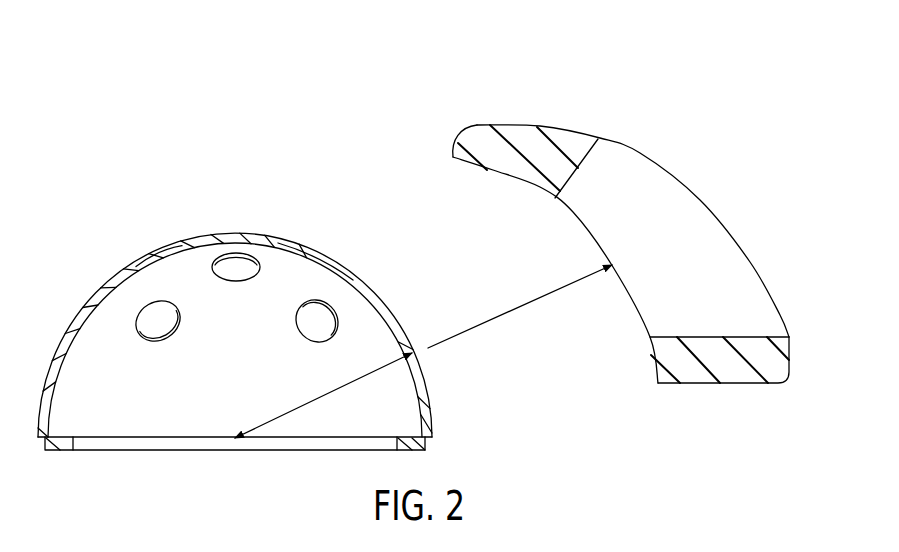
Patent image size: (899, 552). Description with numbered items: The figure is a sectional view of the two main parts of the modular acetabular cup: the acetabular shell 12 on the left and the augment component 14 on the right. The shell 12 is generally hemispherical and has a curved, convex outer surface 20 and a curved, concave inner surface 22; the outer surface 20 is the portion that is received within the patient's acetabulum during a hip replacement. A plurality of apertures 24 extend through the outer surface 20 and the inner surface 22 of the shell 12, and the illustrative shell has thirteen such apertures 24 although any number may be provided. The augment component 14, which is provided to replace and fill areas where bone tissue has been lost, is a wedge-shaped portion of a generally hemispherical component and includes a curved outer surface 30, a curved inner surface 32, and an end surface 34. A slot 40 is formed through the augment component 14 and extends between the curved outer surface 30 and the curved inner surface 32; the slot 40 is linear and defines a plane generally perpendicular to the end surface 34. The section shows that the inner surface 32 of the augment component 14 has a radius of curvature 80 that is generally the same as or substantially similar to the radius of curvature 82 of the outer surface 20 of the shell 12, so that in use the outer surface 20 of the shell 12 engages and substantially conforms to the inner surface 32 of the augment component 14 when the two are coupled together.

The acetabular shell 12 is at (93, 236).
The augment component 14 is at (684, 80).
The outer surface 20 is at (63, 338).
The inner surface 22 is at (55, 392).
The apertures 24 is at (178, 324).
The curved outer surface 30 is at (777, 301).
The curved inner surface 32 is at (653, 356).
The end surface 34 is at (742, 385).
The slot 40 is at (580, 176).
The radius of curvature 80 is at (467, 330).
The radius of curvature 82 is at (288, 412).